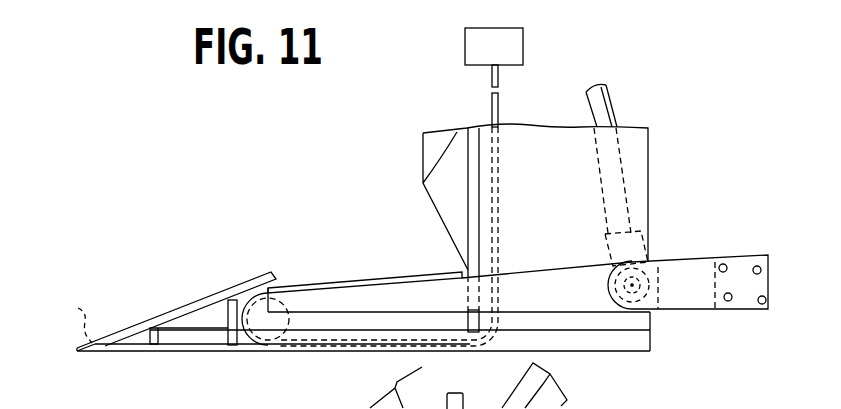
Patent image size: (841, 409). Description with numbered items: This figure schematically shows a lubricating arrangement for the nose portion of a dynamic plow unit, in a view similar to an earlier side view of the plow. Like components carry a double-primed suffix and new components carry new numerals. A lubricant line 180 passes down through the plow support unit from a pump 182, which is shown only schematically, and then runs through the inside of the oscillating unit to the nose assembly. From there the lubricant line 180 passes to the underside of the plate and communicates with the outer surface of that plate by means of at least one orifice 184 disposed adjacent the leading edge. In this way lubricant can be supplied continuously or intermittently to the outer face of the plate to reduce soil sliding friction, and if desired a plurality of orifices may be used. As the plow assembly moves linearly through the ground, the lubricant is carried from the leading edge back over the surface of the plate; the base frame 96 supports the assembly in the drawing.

The base frame 96 is at (642, 338).
The lubricant line 180 is at (500, 245).
The pump 182 is at (515, 52).
The orifice 184 is at (66, 318).